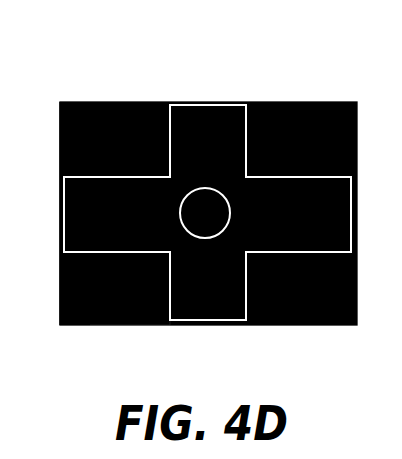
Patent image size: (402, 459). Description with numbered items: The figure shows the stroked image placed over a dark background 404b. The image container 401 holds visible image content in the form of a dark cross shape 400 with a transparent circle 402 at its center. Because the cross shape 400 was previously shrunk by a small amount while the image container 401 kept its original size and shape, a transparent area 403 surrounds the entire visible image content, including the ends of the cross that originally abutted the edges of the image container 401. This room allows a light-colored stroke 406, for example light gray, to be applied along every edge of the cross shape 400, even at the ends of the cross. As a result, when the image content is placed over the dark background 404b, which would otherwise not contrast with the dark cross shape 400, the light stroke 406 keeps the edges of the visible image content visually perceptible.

The cross shape 400 is at (115, 183).
The image container 401 is at (120, 102).
The transparent circle 402 is at (190, 223).
The transparent area 403 is at (61, 259).
The dark background 404b is at (322, 102).
The light-colored stroke 406 is at (249, 162).